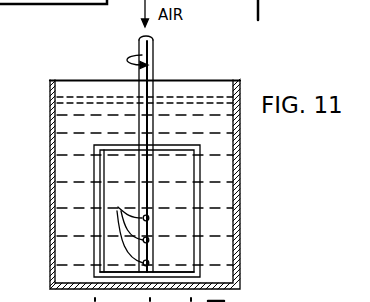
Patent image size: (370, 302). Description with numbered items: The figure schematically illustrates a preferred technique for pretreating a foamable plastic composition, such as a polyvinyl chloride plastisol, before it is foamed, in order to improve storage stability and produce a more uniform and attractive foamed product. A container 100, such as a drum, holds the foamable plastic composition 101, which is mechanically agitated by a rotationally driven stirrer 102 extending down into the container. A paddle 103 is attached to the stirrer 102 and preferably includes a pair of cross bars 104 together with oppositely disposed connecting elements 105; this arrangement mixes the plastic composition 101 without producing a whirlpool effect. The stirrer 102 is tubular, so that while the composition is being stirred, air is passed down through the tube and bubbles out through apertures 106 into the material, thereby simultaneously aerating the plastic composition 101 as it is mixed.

The container 100 is at (240, 173).
The foamable plastic composition 101 is at (224, 145).
The stirrer 102 is at (150, 56).
The paddle 103 is at (202, 256).
The connecting elements 105 is at (194, 218).
The cross bars 104 is at (110, 144).
The apertures 106 is at (128, 226).